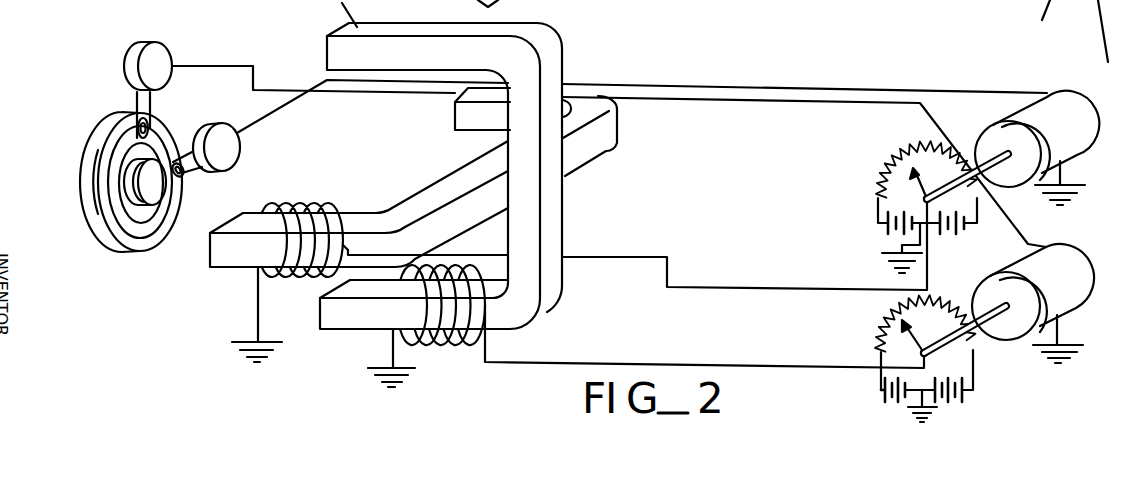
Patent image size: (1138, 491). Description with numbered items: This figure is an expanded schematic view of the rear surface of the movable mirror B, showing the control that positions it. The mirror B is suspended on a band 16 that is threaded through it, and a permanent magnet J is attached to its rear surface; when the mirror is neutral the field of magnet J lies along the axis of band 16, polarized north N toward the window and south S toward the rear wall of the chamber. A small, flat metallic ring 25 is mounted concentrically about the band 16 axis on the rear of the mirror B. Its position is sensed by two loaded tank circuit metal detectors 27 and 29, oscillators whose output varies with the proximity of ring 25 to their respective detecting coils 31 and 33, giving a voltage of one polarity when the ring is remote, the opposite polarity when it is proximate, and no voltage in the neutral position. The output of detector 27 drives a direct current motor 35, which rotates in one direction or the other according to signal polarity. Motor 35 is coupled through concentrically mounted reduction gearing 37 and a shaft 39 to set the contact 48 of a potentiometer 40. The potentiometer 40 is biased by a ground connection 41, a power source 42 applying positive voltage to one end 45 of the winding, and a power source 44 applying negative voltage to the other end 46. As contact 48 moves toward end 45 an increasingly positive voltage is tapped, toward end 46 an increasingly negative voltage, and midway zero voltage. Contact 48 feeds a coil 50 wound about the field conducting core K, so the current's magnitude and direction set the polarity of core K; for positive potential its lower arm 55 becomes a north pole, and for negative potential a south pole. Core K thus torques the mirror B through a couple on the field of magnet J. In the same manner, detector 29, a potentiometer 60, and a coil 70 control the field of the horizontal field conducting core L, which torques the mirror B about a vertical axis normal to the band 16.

The band 16 is at (50, 177).
The north pole N is at (72, 180).
The south pole S is at (153, 183).
The mirror B is at (87, 228).
The permanent magnet J is at (157, 193).
The metallic ring 25 is at (132, 227).
The loaded tank circuit metal detector 27 is at (128, 58).
The loaded tank circuit metal detector 29 is at (230, 152).
The detecting coil 31 is at (148, 127).
The detecting coil 33 is at (207, 127).
The field conducting core K is at (438, 68).
The field conducting core L is at (461, 231).
The lower arm 55 is at (350, 318).
The coil 70 is at (318, 203).
The coil 50 is at (442, 345).
The potentiometer 60 is at (895, 162).
The reduction gearing 37 is at (1047, 300).
The potentiometer 40 is at (880, 315).
The contact 48 is at (932, 308).
The winding end 45 is at (879, 344).
The winding end 46 is at (973, 353).
The ground connection 41 is at (910, 392).
The power source 42 is at (880, 394).
The power source 44 is at (950, 405).
The direct current motor 35 is at (1077, 275).
The shaft 39 is at (987, 322).